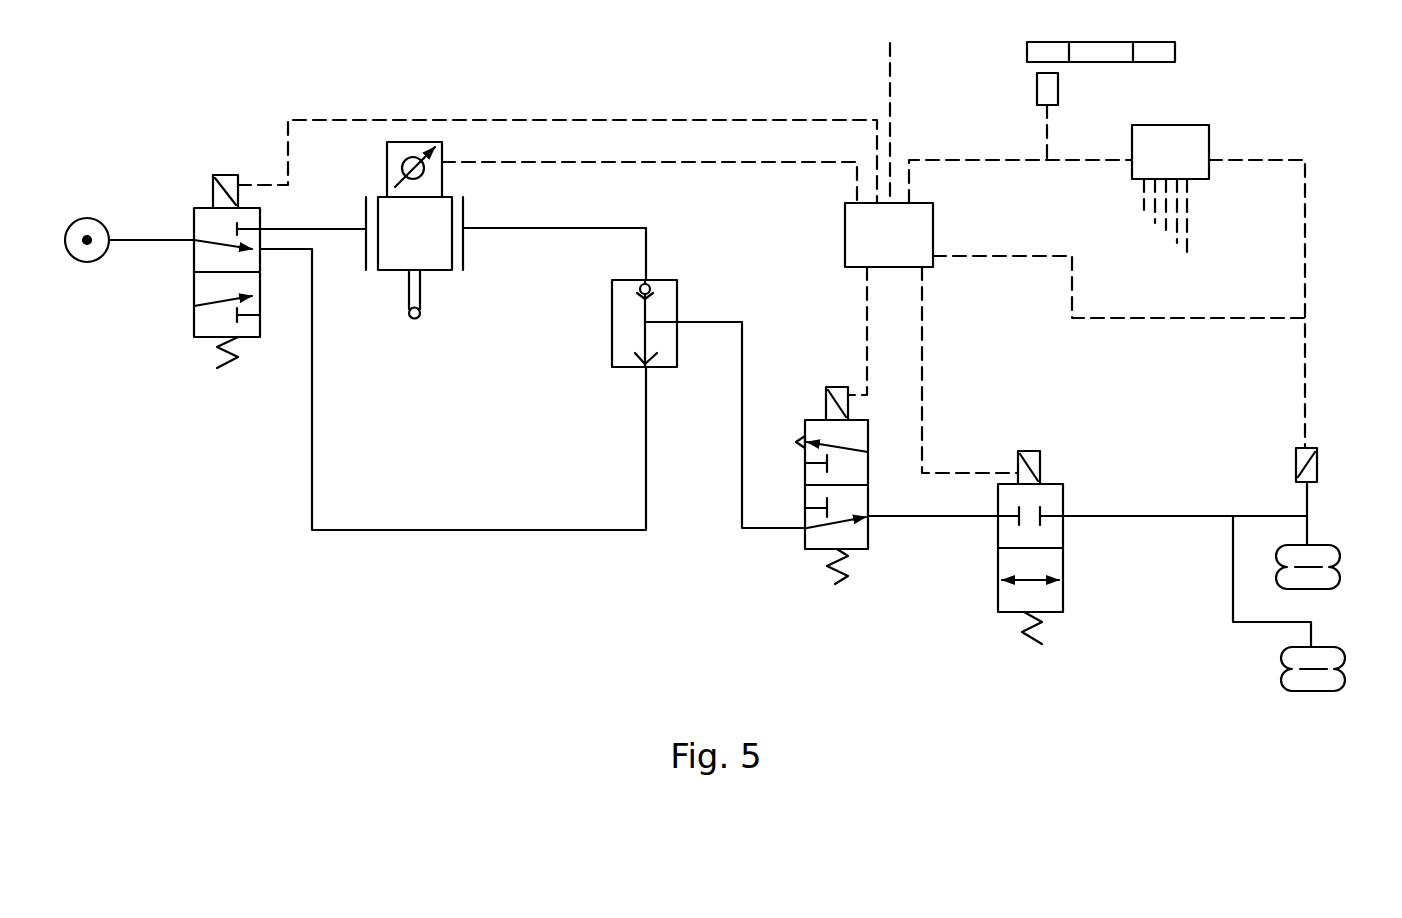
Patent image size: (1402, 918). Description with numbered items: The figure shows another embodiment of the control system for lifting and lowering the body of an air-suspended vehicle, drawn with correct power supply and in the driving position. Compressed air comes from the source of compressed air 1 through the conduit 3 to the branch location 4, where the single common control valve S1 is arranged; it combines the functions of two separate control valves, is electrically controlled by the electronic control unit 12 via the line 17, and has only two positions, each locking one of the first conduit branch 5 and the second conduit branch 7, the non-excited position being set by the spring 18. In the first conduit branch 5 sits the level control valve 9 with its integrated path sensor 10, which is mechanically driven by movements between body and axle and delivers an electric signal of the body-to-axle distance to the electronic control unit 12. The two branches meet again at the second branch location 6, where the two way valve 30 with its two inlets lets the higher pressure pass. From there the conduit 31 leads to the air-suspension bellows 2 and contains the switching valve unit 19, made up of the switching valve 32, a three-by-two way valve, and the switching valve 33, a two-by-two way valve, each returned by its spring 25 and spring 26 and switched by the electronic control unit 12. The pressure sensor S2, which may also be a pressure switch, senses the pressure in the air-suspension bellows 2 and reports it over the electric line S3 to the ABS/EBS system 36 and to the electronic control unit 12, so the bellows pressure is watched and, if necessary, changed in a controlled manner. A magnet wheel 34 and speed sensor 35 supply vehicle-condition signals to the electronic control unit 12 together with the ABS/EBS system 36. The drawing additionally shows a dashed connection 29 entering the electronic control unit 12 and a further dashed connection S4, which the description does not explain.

The source of compressed air 1 is at (87, 252).
The air-suspension bellows 2 is at (1337, 657).
The conduit 3 is at (127, 243).
The branch location 4 is at (193, 243).
The first conduit branch 5 is at (329, 227).
The second branch location 6 is at (646, 322).
The second conduit branch 7 is at (357, 532).
The level control valve 9 is at (382, 187).
The path sensor 10 is at (402, 140).
The electronic control unit 12 is at (858, 224).
The line 17 is at (705, 120).
The spring 18 is at (223, 370).
The switching valve unit 19 is at (887, 423).
The spring 25 is at (845, 584).
The spring 26 is at (1033, 645).
The signal line 29 is at (892, 95).
The two way valve 30 is at (610, 333).
The conduit 31 is at (758, 530).
The switching valve 32 is at (814, 563).
The switching valve 33 is at (1067, 590).
The magnet wheel 34 is at (1157, 50).
The speed sensor 35 is at (1043, 92).
The ABS/EBS system 36 is at (1183, 138).
The control valve S1 is at (187, 322).
The pressure sensor S2 is at (1318, 462).
The electric line S3 is at (1307, 252).
The signal line S4 is at (1262, 317).